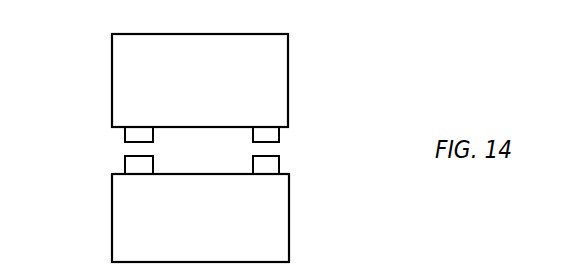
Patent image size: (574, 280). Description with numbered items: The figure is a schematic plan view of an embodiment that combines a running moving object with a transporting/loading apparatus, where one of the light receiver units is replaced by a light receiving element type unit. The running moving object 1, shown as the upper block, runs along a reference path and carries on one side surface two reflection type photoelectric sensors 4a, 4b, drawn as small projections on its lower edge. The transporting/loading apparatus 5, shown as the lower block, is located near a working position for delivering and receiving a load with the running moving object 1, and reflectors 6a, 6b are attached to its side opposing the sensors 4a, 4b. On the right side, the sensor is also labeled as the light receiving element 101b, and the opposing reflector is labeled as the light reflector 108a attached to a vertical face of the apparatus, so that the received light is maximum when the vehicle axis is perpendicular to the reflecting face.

The running moving object 1 is at (288, 73).
The transporting/loading apparatus 5 is at (289, 230).
The reflection type photoelectric sensor 4a is at (125, 135).
The reflector 6a is at (125, 165).
The light receiving element 101b is at (329, 129).
The reflection type photoelectric sensor 4b is at (280, 139).
The light reflector 108a is at (329, 169).
The reflector 6b is at (279, 164).